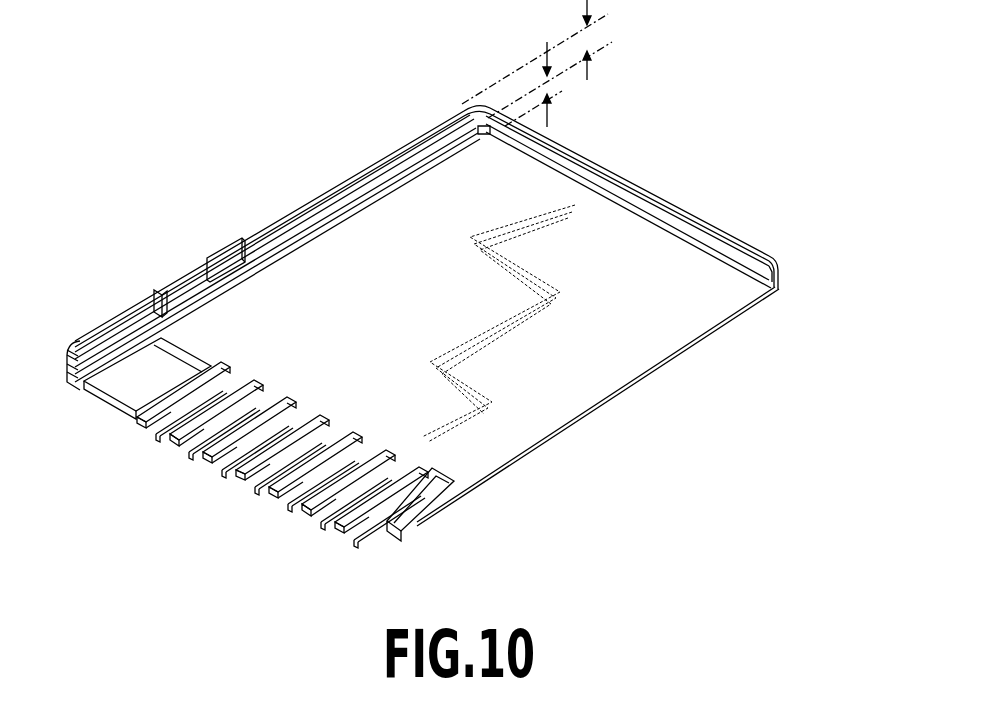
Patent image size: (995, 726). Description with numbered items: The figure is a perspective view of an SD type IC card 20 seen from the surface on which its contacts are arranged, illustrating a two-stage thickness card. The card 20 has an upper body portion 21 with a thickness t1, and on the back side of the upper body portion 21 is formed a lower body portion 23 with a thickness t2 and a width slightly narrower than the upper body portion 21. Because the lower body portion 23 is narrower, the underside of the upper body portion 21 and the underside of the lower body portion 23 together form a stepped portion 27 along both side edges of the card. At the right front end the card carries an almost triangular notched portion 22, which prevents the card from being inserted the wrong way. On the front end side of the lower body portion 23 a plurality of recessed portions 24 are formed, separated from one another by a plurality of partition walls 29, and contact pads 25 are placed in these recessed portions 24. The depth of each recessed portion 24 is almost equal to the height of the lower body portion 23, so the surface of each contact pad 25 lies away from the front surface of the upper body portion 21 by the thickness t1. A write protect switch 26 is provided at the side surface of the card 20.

The IC card 20 is at (453, 292).
The upper body portion 21 is at (357, 168).
The notched portion 22 is at (385, 527).
The lower body portion 23 is at (610, 220).
The recessed portions 24 is at (178, 355).
The contact pads 25 is at (130, 372).
The write protect switch 26 is at (228, 241).
The stepped portion 27 is at (312, 228).
The partition walls 29 is at (242, 385).
The thickness of the upper body portion t1 is at (603, 18).
The thickness of the lower body portion t2 is at (553, 74).